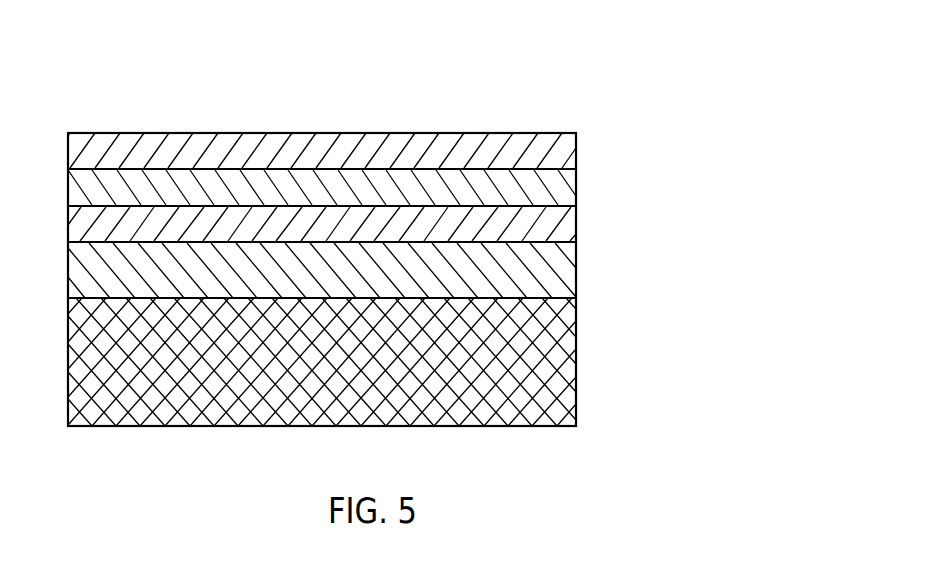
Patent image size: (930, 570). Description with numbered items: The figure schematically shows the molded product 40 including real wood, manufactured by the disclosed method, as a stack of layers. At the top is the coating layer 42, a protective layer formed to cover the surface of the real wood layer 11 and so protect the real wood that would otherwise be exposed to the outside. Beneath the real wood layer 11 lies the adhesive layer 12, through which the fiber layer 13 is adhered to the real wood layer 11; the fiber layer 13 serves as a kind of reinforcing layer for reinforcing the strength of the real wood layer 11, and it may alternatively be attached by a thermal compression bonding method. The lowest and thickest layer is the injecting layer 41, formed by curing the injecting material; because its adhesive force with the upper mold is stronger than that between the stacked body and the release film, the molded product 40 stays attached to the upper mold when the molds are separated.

The molded product 40 is at (583, 53).
The coating layer 42 is at (577, 147).
The real wood layer 11 is at (577, 186).
The adhesive layer 12 is at (577, 223).
The fiber layer 13 is at (577, 271).
The injecting layer 41 is at (577, 363).